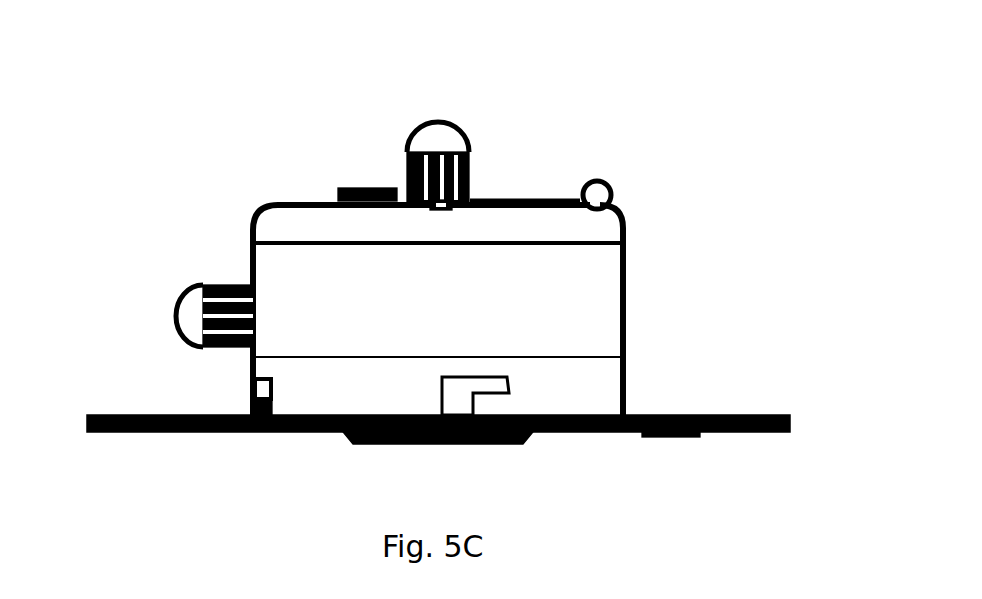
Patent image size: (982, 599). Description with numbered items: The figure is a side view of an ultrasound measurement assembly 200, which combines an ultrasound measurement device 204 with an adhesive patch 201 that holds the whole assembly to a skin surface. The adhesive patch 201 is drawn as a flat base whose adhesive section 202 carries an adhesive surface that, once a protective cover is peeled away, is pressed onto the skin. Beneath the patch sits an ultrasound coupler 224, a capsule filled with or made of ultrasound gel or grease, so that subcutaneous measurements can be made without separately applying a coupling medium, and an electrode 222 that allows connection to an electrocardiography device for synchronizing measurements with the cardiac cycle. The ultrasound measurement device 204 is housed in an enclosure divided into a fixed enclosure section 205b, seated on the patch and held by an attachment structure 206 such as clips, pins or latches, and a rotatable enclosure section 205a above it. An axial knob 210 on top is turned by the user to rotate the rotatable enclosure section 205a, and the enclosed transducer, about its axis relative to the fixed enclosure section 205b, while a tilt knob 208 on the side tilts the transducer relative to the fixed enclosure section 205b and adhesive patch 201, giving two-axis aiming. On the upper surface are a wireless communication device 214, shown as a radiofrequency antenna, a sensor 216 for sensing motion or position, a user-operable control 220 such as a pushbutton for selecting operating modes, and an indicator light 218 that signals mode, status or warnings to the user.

The ultrasound measurement assembly 200 is at (773, 70).
The adhesive patch 201 is at (115, 398).
The adhesive section 202 is at (765, 412).
The ultrasound measurement device 204 is at (193, 222).
The rotatable enclosure section 205a is at (612, 268).
The fixed enclosure section 205b is at (615, 395).
The attachment structure 206 is at (465, 378).
The tilt knob 208 is at (178, 312).
The axial knob 210 is at (425, 120).
The wireless communication device 214 is at (522, 195).
The sensor 216 is at (442, 208).
The indicator light 218 is at (615, 193).
The user-operable control 220 is at (348, 188).
The electrode 222 is at (688, 434).
The ultrasound coupler 224 is at (487, 443).